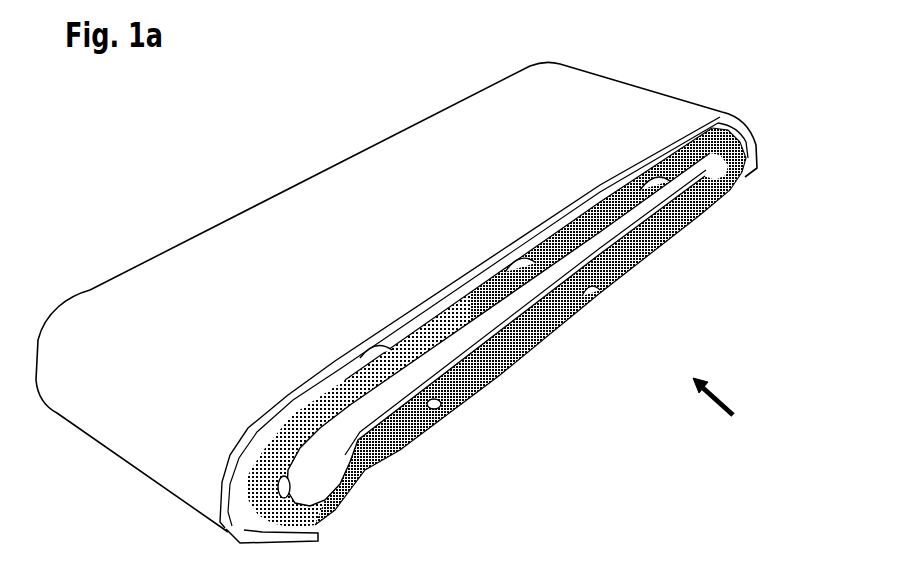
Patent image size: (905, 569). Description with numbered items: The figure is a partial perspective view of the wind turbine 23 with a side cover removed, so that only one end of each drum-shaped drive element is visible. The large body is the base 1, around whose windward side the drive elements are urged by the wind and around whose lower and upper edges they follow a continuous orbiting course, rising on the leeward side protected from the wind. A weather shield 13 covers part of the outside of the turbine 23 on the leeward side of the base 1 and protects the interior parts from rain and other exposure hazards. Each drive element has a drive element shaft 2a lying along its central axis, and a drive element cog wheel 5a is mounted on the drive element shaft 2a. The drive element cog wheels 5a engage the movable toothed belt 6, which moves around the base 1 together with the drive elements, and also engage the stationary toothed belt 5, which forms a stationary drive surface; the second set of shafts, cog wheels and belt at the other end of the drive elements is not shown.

The base 1 is at (652, 213).
The drive element shaft 2a is at (590, 296).
The stationary toothed belt 5 is at (287, 497).
The drive element cog wheel 5a is at (438, 406).
The movable toothed belt 6 is at (520, 257).
The weather shield 13 is at (203, 277).
The wind turbine 23 is at (735, 422).